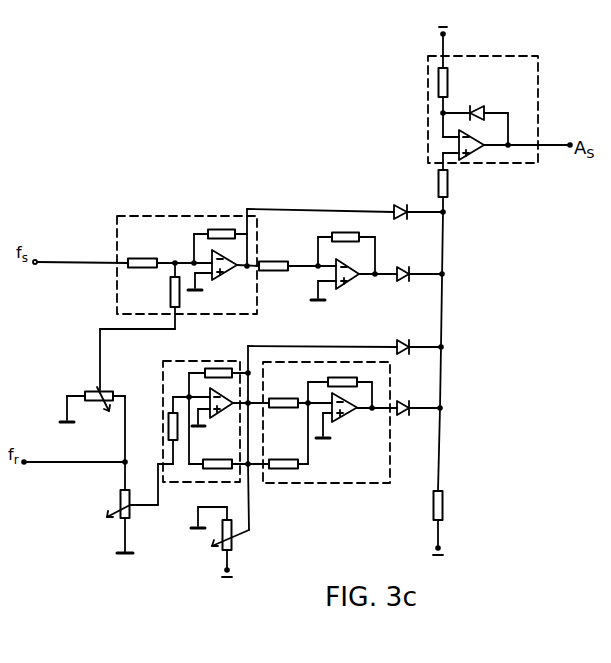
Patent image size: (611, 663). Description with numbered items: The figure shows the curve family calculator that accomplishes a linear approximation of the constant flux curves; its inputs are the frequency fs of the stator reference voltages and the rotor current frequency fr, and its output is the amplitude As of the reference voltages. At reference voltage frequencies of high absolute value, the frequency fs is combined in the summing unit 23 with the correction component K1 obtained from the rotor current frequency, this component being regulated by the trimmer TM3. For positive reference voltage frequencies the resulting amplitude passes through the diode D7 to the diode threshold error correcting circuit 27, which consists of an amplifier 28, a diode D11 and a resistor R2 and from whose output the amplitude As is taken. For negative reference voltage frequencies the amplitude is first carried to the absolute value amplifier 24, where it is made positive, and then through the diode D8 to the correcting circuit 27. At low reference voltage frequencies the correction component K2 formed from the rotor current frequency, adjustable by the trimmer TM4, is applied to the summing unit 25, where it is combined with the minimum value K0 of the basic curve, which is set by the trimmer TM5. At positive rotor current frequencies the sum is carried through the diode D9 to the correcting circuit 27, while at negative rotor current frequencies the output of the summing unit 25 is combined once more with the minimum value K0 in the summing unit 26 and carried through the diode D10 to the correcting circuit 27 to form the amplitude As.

The summing unit 23 is at (213, 214).
The absolute value amplifier 24 is at (350, 289).
The summing unit 25 is at (233, 360).
The summing unit 26 is at (390, 465).
The diode threshold error correcting circuit 27 is at (428, 90).
The amplifier 28 is at (478, 160).
The resistor R2 is at (455, 82).
The diode D7 is at (345, 223).
The diode D8 is at (420, 285).
The diode D9 is at (346, 357).
The diode D10 is at (419, 420).
The diode D11 is at (480, 117).
The trimmer TM3 is at (91, 398).
The trimmer TM4 is at (140, 508).
The trimmer TM5 is at (230, 542).